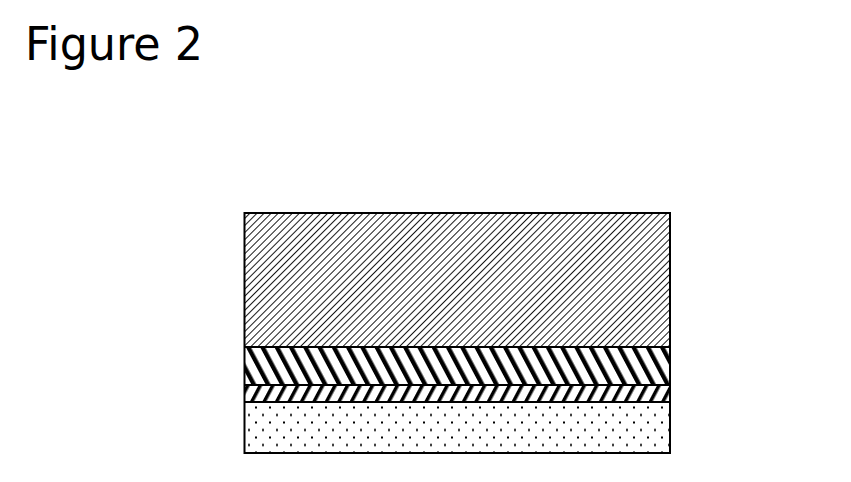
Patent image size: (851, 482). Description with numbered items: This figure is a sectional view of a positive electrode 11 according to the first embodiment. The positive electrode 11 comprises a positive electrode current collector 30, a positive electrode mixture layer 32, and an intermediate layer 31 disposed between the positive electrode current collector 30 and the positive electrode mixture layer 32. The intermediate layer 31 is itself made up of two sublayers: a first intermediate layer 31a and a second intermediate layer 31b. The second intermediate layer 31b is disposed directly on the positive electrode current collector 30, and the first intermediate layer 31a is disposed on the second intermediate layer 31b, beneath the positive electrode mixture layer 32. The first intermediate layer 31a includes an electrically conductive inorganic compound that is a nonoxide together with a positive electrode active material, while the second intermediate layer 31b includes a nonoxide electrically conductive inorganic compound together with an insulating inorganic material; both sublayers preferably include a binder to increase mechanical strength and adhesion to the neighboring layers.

The positive electrode 11 is at (688, 182).
The positive electrode mixture layer 32 is at (671, 270).
The intermediate layer 31 is at (772, 320).
The first intermediate layer 31a is at (671, 360).
The second intermediate layer 31b is at (671, 395).
The positive electrode current collector 30 is at (671, 433).